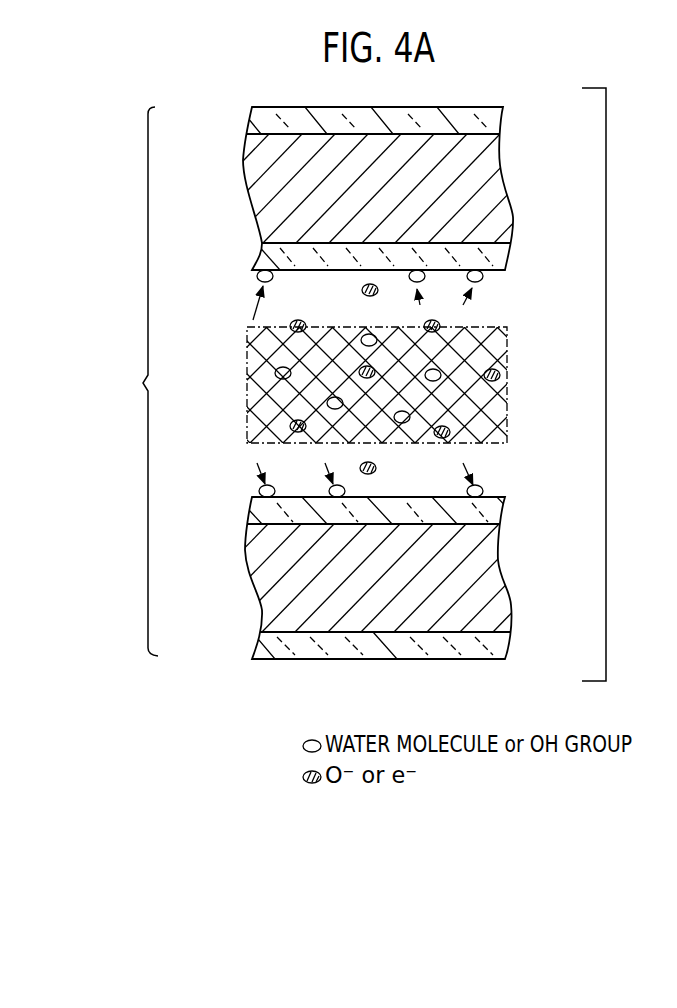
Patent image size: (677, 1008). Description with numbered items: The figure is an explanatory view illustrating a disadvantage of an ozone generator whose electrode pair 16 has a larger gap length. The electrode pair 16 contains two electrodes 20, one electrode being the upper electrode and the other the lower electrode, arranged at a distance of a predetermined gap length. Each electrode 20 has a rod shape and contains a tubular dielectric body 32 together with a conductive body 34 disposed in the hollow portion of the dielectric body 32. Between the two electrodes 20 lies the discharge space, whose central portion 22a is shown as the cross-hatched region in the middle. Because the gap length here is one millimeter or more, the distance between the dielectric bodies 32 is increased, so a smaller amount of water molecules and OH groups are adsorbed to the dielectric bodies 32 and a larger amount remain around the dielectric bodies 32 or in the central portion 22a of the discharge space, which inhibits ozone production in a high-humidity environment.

The electrode pair 16 is at (361, 384).
The electrode 20 is at (245, 174).
The central portion of the discharge space 22a is at (507, 382).
The dielectric body 32 is at (487, 123).
The conductive body 34 is at (487, 185).